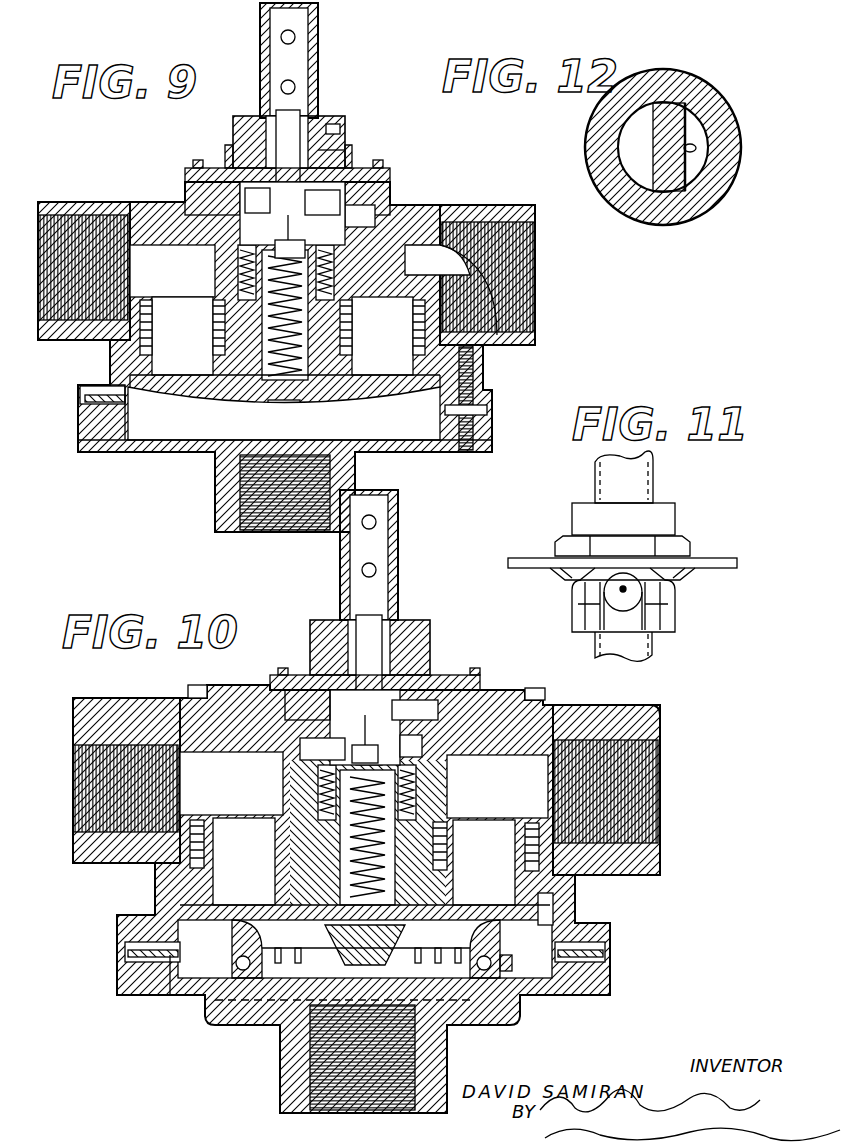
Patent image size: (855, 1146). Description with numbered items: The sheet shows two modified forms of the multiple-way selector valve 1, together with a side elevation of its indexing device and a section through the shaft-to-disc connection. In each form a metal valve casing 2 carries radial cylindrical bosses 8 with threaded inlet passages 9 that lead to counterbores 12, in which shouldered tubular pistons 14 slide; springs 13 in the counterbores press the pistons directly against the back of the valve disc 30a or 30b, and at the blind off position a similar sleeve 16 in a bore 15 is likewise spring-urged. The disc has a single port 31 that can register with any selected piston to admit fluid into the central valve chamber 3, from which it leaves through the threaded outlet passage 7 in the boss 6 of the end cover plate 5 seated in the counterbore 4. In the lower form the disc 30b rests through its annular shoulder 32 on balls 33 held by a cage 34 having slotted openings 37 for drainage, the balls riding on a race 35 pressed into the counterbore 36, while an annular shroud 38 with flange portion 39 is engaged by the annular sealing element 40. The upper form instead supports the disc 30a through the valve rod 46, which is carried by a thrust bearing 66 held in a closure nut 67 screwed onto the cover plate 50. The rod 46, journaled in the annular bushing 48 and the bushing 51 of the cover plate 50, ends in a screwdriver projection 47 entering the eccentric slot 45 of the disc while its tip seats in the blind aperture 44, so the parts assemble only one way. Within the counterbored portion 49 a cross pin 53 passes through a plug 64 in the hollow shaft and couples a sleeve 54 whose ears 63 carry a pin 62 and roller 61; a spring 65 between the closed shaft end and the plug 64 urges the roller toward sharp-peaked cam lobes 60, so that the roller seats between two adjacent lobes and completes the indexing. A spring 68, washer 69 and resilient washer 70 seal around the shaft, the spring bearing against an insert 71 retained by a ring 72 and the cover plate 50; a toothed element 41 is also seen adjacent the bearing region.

In FIG. 9, the multiple-way valve 1 is at (100, 340).
In FIG. 10, the multiple-way valve 1 is at (140, 876).
In FIG. 9, the valve casing 2 is at (372, 238).
In FIG. 10, the valve casing 2 is at (366, 899).
In FIG. 9, the valve chamber 3 is at (150, 445).
In FIG. 10, the valve chamber 3 is at (195, 962).
In FIG. 9, the counterbore 4 is at (88, 399).
In FIG. 9, the end cover plate 5 is at (183, 445).
In FIG. 10, the end cover plate 5 is at (556, 1004).
In FIG. 9, the boss 6 is at (226, 493).
In FIG. 10, the boss 6 is at (283, 1082).
In FIG. 9, the threaded outlet passage 7 is at (268, 522).
In FIG. 10, the threaded outlet passage 7 is at (353, 1098).
In FIG. 9, the cylindrical bosses 8 is at (54, 205).
In FIG. 10, the cylindrical bosses 8 is at (660, 722).
In FIG. 9, the threaded inlet passages 9 is at (46, 266).
In FIG. 10, the threaded inlet passages 9 is at (650, 792).
In FIG. 9, the counterbores 12 is at (213, 342).
In FIG. 10, the counterbores 12 is at (540, 832).
In FIG. 9, the springs 13 is at (152, 325).
In FIG. 10, the springs 13 is at (214, 838).
In FIG. 9, the tubular pistons 14 is at (154, 361).
In FIG. 10, the tubular pistons 14 is at (447, 862).
In FIG. 9, the blind aperture 15 is at (451, 290).
In FIG. 9, the sleeve 16 is at (354, 355).
In FIG. 9, the valve disc 30a is at (176, 388).
In FIG. 12, the valve disc 30b is at (672, 210).
In FIG. 10, the valve disc 30b is at (556, 914).
In FIG. 9, the port 31 is at (385, 396).
In FIG. 10, the port 31 is at (222, 908).
In FIG. 10, the annular shoulder 32 is at (236, 940).
In FIG. 10, the balls 33 is at (222, 972).
In FIG. 10, the cage 34 is at (458, 968).
In FIG. 10, the race 35 is at (488, 972).
In FIG. 10, the counterbore 36 is at (513, 1015).
In FIG. 10, the slotted openings 37 is at (330, 968).
In FIG. 10, the annular shroud 38 is at (387, 957).
In FIG. 10, the flange portion 39 is at (546, 998).
In FIG. 10, the annular sealing element 40 is at (610, 936).
In FIG. 10, the ring gear 41 is at (352, 968).
In FIG. 12, the blind aperture 44 is at (632, 186).
In FIG. 10, the blind aperture 44 is at (333, 944).
In FIG. 12, the slot 45 is at (684, 148).
In FIG. 10, the slot 45 is at (392, 966).
In FIG. 9, the valve rod 46 is at (304, 63).
In FIG. 11, the valve rod 46 is at (640, 482).
In FIG. 10, the valve rod 46 is at (400, 604).
In FIG. 12, the screwdriver projection 47 is at (703, 172).
In FIG. 10, the annular bushing 48 is at (432, 845).
In FIG. 10, the counterbored portion 49 is at (497, 786).
In FIG. 9, the cover plate 50 is at (384, 168).
In FIG. 9, the bushing 51 is at (346, 158).
In FIG. 9, the pin 53 is at (289, 240).
In FIG. 10, the pin 53 is at (360, 745).
In FIG. 9, the sleeve 54 is at (322, 202).
In FIG. 11, the sleeve 54 is at (612, 652).
In FIG. 10, the sleeve 54 is at (322, 749).
In FIG. 9, the cam lobes 60 is at (234, 178).
In FIG. 11, the cam lobes 60 is at (656, 576).
In FIG. 10, the cam lobes 60 is at (302, 690).
In FIG. 9, the roller 61 is at (190, 188).
In FIG. 11, the roller 61 is at (582, 602).
In FIG. 10, the roller 61 is at (292, 722).
In FIG. 9, the pin 62 is at (278, 212).
In FIG. 11, the pin 62 is at (628, 590).
In FIG. 10, the pin 62 is at (352, 718).
In FIG. 9, the ears 63 is at (240, 212).
In FIG. 11, the ears 63 is at (602, 612).
In FIG. 10, the ears 63 is at (318, 752).
In FIG. 9, the plug 64 is at (368, 185).
In FIG. 10, the plug 64 is at (415, 710).
In FIG. 9, the spring 65 is at (300, 392).
In FIG. 10, the spring 65 is at (338, 797).
In FIG. 9, the thrust bearing 66 is at (340, 132).
In FIG. 9, the closure nut 67 is at (243, 116).
In FIG. 9, the spring 68 is at (240, 258).
In FIG. 10, the spring 68 is at (416, 786).
In FIG. 9, the washer 69 is at (418, 300).
In FIG. 10, the washer 69 is at (443, 798).
In FIG. 9, the resilient washer 70 is at (340, 306).
In FIG. 10, the resilient washer 70 is at (418, 815).
In FIG. 9, the insert 71 is at (418, 205).
In FIG. 10, the insert 71 is at (428, 746).
In FIG. 9, the ring 72 is at (380, 207).